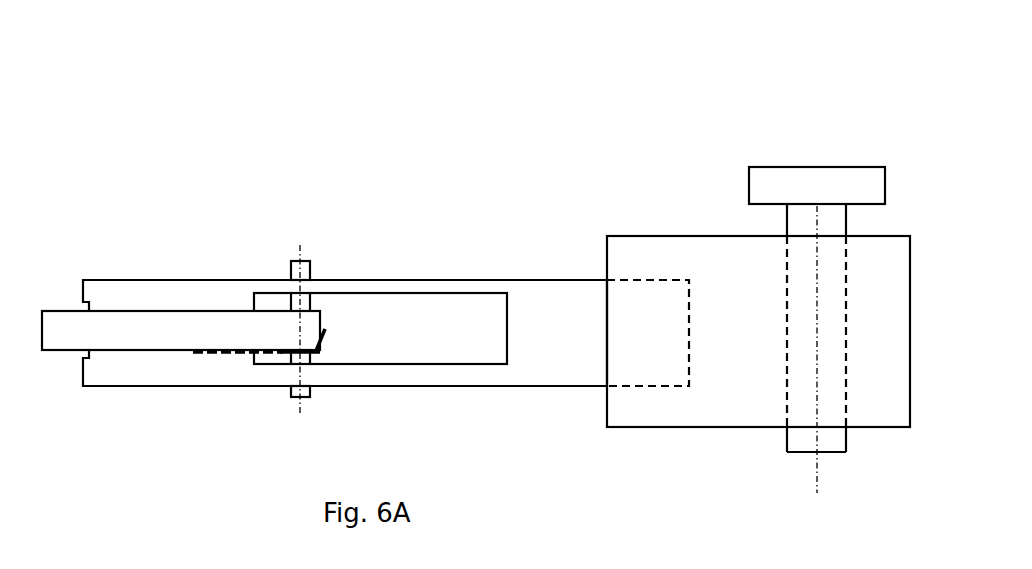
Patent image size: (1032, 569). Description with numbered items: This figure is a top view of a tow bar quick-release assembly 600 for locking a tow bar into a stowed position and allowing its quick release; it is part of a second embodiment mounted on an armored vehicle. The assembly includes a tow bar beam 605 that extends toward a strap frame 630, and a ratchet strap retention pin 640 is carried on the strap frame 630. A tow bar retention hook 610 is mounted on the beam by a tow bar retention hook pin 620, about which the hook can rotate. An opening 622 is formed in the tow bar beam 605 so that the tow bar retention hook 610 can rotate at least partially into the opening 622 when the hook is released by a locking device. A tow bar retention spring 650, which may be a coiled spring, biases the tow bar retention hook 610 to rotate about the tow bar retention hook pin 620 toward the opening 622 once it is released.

The tow bar quick-release assembly 600 is at (770, 116).
The tow bar beam 605 is at (529, 358).
The tow bar retention hook 610 is at (67, 335).
The tow bar retention hook pin 620 is at (307, 267).
The opening 622 is at (410, 320).
The strap frame 630 is at (658, 253).
The ratchet strap retention pin 640 is at (862, 193).
The tow bar retention spring 650 is at (232, 353).